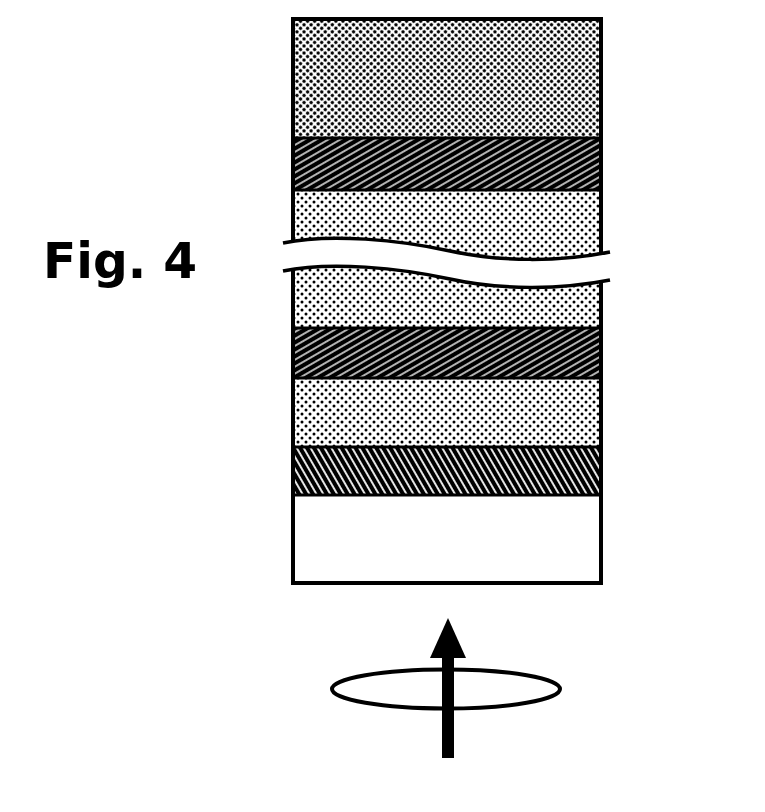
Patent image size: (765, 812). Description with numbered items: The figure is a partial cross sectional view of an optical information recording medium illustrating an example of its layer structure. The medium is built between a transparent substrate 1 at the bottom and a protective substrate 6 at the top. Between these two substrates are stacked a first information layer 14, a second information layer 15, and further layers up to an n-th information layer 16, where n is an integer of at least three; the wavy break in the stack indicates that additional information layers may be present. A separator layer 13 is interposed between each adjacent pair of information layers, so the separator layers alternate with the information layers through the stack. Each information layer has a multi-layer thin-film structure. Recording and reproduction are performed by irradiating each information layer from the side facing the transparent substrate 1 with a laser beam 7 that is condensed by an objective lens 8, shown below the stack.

The transparent substrate 1 is at (601, 537).
The protective substrate 6 is at (601, 90).
The laser beam 7 is at (455, 733).
The objective lens 8 is at (560, 689).
The separator layer 13 is at (601, 217).
The first information layer 14 is at (601, 473).
The second information layer 15 is at (601, 355).
The n-th information layer 16 is at (601, 167).